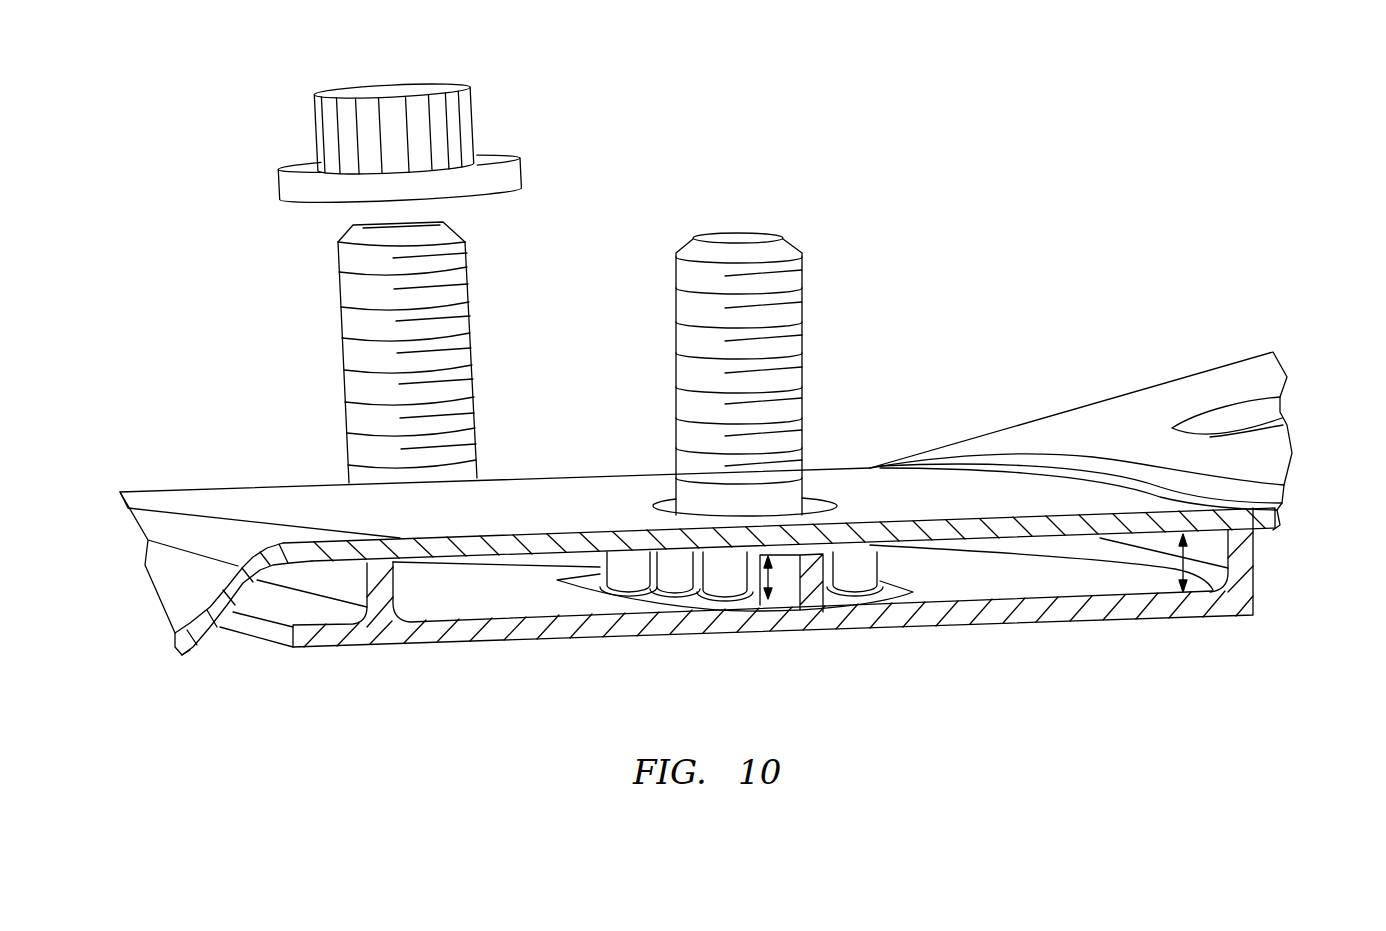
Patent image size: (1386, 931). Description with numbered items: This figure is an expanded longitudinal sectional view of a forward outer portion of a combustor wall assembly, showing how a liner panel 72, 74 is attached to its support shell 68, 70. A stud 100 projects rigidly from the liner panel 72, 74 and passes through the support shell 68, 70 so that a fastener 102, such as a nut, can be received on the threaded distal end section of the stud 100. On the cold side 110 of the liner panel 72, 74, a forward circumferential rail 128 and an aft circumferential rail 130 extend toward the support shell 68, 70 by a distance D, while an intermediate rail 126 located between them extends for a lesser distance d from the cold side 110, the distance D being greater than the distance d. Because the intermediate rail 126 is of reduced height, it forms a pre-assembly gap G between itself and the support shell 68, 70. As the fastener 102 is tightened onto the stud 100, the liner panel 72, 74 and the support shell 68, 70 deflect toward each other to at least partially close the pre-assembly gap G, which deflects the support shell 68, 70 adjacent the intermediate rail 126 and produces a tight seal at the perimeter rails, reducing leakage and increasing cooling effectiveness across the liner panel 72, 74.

The stud 100 is at (784, 226).
The fastener 102 is at (460, 138).
The support shell 68 is at (1081, 432).
The support shell 70 is at (1058, 428).
The liner panel 72 is at (718, 587).
The liner panel 74 is at (1255, 604).
The cold side 110 is at (993, 585).
The intermediate rail 126 is at (810, 580).
The forward circumferential rail 128 is at (380, 588).
The aft circumferential rail 130 is at (1245, 552).
The pre-assembly gap G is at (807, 547).
The distance d is at (760, 572).
The distance D is at (1180, 563).